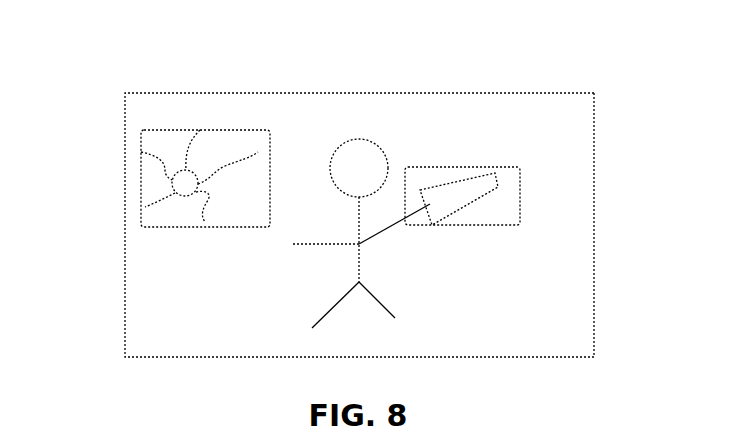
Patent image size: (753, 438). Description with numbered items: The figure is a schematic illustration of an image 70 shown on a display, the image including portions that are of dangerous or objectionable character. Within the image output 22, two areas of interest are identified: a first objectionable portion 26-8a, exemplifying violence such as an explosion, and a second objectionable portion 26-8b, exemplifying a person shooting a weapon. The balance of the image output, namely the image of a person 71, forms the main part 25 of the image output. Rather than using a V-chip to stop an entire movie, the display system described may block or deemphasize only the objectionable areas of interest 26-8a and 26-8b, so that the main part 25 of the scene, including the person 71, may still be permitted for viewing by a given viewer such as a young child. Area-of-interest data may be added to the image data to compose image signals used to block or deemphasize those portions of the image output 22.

The image 70 is at (86, 116).
The image output 22 is at (583, 170).
The main part 25 is at (588, 233).
The area of interest 26-8a is at (257, 130).
The person 71 is at (376, 146).
The area of interest 26-8b is at (520, 203).